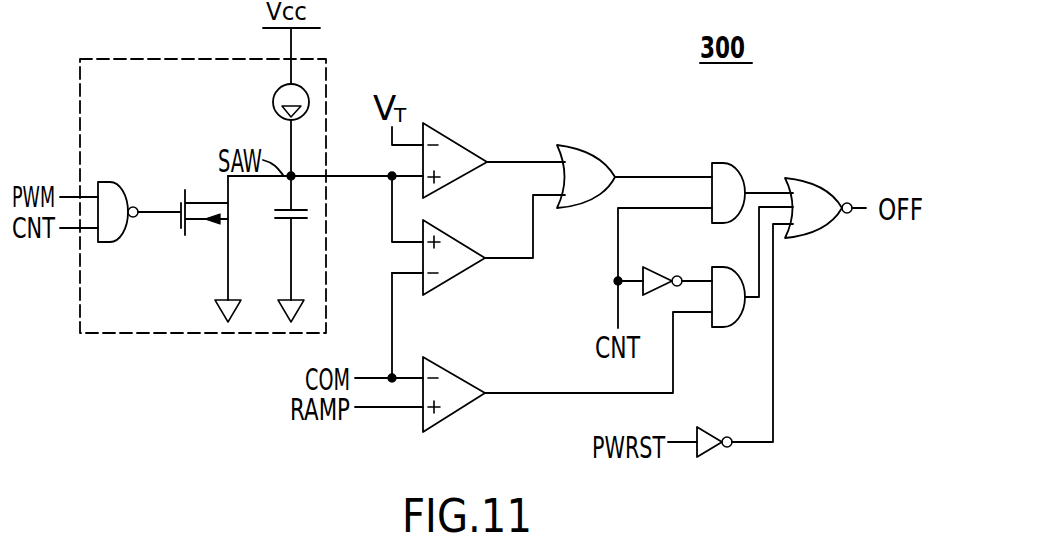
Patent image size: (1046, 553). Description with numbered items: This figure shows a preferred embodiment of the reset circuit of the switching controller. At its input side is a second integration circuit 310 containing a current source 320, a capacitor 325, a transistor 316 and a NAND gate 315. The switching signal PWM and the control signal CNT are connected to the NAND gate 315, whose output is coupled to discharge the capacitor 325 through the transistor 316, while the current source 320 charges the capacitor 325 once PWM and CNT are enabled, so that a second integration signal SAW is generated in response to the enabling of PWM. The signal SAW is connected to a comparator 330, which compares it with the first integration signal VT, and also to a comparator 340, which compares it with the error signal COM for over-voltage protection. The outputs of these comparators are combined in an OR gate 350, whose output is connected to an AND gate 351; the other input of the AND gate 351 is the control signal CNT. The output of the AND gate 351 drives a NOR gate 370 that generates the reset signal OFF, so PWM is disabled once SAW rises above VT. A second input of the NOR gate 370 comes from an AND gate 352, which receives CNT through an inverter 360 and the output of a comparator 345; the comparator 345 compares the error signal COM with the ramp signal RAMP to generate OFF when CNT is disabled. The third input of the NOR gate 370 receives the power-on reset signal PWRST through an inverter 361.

The second integration circuit 310 is at (150, 58).
The NAND gate 315 is at (123, 183).
The transistor 316 is at (181, 228).
The current source 320 is at (273, 102).
The capacitor 325 is at (275, 220).
The comparator 330 is at (455, 141).
The comparator 340 is at (455, 235).
The comparator 345 is at (455, 372).
The OR gate 350 is at (580, 148).
The AND gate 351 is at (722, 163).
The AND gate 352 is at (722, 327).
The inverter 360 is at (660, 267).
The inverter 361 is at (715, 452).
The NOR gate 370 is at (812, 180).